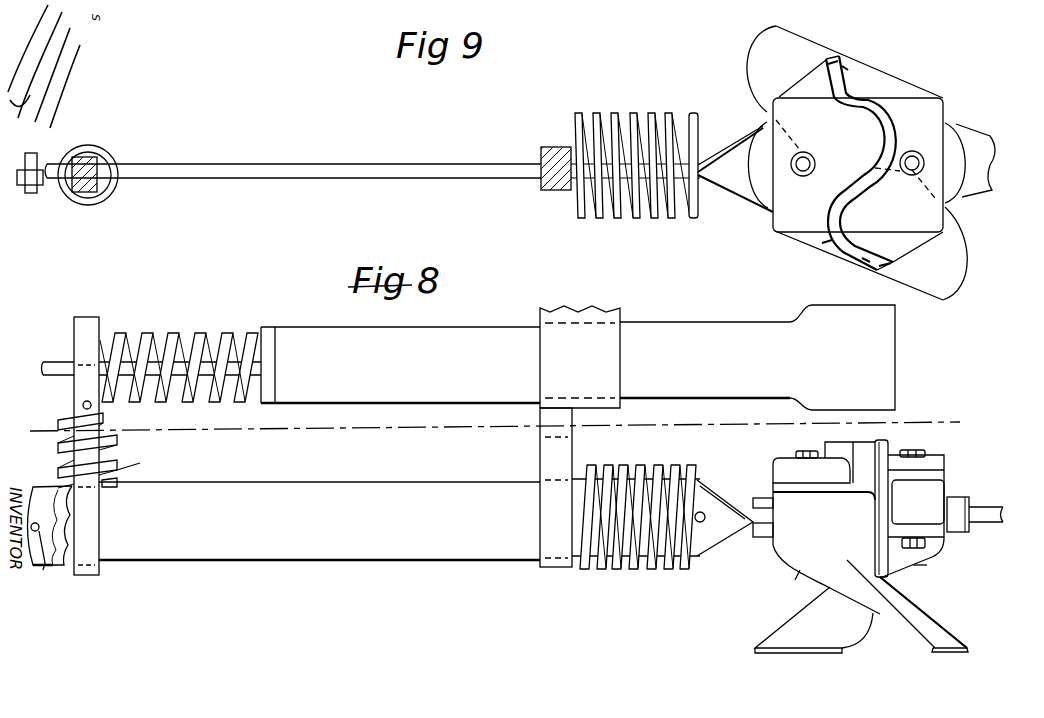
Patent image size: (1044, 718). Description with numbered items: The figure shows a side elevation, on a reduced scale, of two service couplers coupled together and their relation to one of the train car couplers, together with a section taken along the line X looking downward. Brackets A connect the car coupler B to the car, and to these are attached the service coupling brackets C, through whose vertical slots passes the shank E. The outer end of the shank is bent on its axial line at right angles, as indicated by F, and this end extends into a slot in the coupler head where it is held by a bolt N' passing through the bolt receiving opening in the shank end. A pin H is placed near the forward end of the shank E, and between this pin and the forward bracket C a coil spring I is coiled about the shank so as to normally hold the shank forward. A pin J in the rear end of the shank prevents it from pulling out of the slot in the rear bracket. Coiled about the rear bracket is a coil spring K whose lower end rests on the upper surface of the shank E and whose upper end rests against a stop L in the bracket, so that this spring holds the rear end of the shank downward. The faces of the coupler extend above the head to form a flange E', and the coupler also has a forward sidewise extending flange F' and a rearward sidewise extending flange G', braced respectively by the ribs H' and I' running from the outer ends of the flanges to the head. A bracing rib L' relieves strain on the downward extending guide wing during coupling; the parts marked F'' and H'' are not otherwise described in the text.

In FIG. 8, the brackets A is at (100, 317).
In FIG. 8, the car coupler B is at (760, 323).
In FIG. 9, the service coupling brackets C is at (102, 156).
In FIG. 8, the service coupling brackets C is at (547, 460).
In FIG. 9, the shank E is at (372, 152).
In FIG. 8, the shank E is at (319, 509).
In FIG. 9, the bent end of shank F is at (850, 176).
In FIG. 8, the bent end of shank F is at (861, 505).
In FIG. 9, the pin H is at (730, 132).
In FIG. 8, the pin H is at (712, 548).
In FIG. 9, the coil spring I is at (636, 149).
In FIG. 8, the coil spring I is at (636, 501).
In FIG. 9, the pin J is at (29, 193).
In FIG. 8, the pin J is at (63, 573).
In FIG. 9, the coil spring K is at (112, 196).
In FIG. 8, the coil spring K is at (117, 438).
In FIG. 8, the stop L is at (110, 413).
In FIG. 8, the section line X is at (486, 426).
In FIG. 9, the flange E' is at (858, 163).
In FIG. 8, the flange E' is at (854, 508).
In FIG. 9, the forward sidewise extending flange F' is at (867, 57).
In FIG. 9, the flange F'' is at (843, 274).
In FIG. 9, the rearward sidewise extending flange G' is at (854, 165).
In FIG. 8, the rearward sidewise extending flange G' is at (915, 502).
In FIG. 9, the rib H' is at (806, 255).
In FIG. 8, the bracket H'' is at (824, 501).
In FIG. 9, the rib I' is at (857, 161).
In FIG. 8, the rib I' is at (936, 514).
In FIG. 8, the rib L' is at (861, 576).
In FIG. 9, the bolt N' is at (855, 156).
In FIG. 8, the bolt N' is at (869, 489).